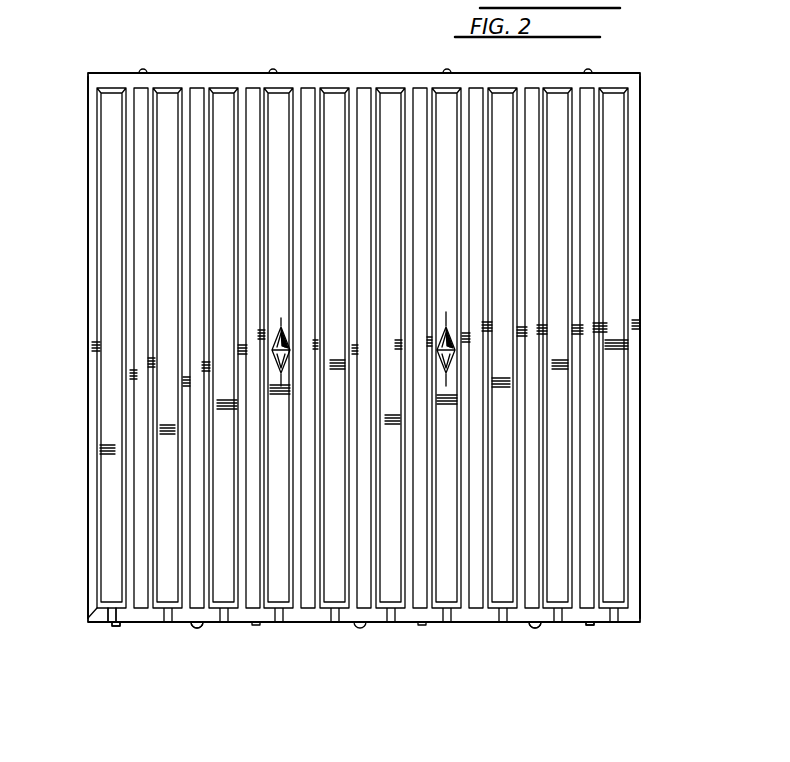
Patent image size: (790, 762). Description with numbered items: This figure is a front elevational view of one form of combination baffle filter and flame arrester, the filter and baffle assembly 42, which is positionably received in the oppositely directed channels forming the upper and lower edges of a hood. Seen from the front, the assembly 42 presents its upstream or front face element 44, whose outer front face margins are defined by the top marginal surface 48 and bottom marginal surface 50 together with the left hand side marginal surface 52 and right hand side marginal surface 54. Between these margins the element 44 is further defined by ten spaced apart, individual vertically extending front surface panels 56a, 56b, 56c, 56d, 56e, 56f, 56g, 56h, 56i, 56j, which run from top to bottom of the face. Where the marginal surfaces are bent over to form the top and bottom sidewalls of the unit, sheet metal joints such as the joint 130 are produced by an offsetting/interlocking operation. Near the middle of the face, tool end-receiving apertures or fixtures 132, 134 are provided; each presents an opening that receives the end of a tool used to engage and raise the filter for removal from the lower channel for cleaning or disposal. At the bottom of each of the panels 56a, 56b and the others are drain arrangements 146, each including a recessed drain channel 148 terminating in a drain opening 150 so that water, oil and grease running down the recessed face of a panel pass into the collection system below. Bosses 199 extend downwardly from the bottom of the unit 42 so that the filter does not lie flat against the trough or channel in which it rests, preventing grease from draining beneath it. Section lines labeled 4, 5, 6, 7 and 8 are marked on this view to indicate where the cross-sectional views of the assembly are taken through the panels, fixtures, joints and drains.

The filter and baffle assembly 42 is at (118, 45).
The upstream or front face element 44 is at (177, 632).
The top marginal surface 48 is at (362, 82).
The bottom marginal surface 50 is at (305, 613).
The left hand side marginal surface 52 is at (95, 376).
The right hand side marginal surface 54 is at (635, 378).
The front surface panel 56a is at (113, 277).
The front surface panel 56b is at (170, 290).
The front surface panel 56c is at (226, 600).
The front surface panel 56d is at (278, 600).
The front surface panel 56e is at (333, 600).
The front surface panel 56f is at (388, 600).
The front surface panel 56g is at (450, 600).
The front surface panel 56h is at (505, 600).
The front surface panel 56i is at (562, 600).
The front surface panel 56j is at (615, 483).
The joint 130 is at (583, 633).
The tool end-receiving aperture or fixture 132 is at (252, 371).
The tool end-receiving aperture or fixture 134 is at (476, 350).
The drain arrangement 146 is at (104, 621).
The channel 148 is at (114, 618).
The drain opening 150 is at (115, 623).
The boss 199 is at (199, 627).
The section line 4- 4 is at (688, 642).
The section line 5- 5 is at (665, 552).
The section line 6- 6 is at (447, 70).
The section line 7- 7 is at (655, 98).
The section line 8- 8 is at (617, 682).